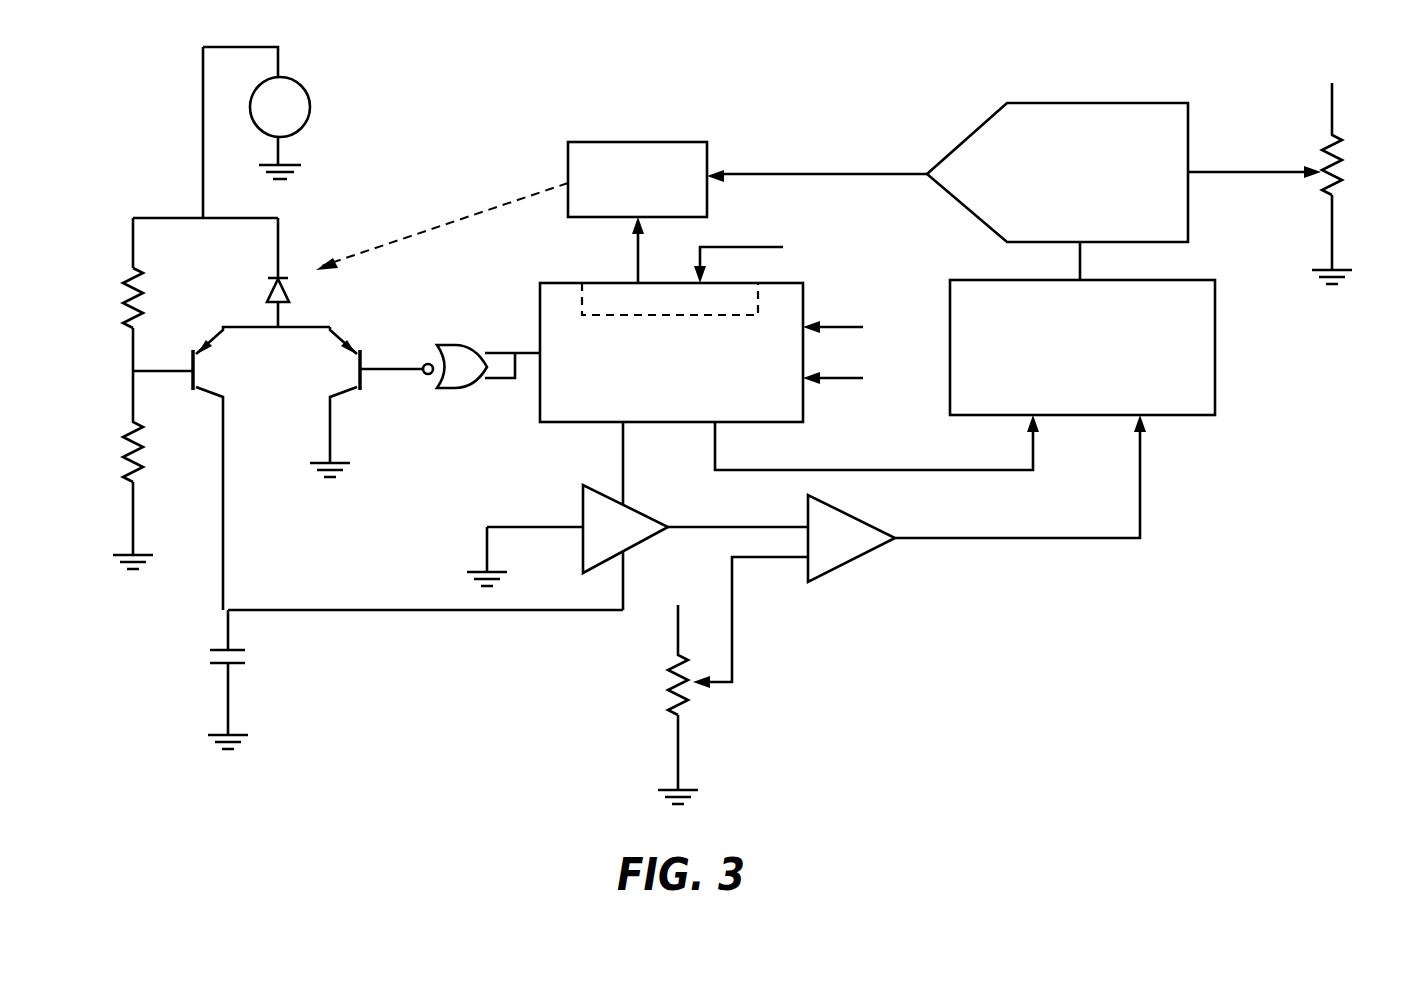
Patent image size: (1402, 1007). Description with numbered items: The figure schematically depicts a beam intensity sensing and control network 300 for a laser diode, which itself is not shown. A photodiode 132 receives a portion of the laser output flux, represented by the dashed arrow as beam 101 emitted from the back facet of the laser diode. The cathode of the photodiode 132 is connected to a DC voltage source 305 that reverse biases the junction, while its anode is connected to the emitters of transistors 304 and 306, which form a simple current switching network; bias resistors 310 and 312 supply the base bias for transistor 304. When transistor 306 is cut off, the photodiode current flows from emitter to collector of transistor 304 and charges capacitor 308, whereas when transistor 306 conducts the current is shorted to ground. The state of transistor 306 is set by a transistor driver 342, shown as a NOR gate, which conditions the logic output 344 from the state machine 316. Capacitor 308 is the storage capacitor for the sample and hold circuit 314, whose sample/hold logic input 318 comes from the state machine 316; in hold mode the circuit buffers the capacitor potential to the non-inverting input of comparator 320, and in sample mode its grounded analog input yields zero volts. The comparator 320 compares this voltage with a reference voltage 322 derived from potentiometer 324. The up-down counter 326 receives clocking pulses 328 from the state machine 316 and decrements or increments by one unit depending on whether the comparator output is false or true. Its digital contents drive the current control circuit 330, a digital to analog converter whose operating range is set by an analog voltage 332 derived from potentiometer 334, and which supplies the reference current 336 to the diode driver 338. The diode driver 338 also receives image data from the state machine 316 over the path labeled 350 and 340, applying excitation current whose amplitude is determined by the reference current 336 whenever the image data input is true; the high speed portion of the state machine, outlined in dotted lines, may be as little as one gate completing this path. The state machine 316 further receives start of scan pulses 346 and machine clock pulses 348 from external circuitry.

The beam intensity sensing and control network 300 is at (485, 80).
The DC voltage source 305 is at (308, 105).
The beam 101 is at (432, 227).
The photodiode 132 is at (268, 298).
The bias resistor 310 is at (125, 302).
The bias resistor 312 is at (128, 455).
The transistor 304 is at (202, 377).
The transistor 306 is at (352, 368).
The capacitor 308 is at (235, 665).
The transistor driver 342 is at (456, 390).
The logic output 344 is at (508, 353).
The state machine 316 is at (668, 424).
The diode driver 338 is at (638, 142).
The image data path 340 is at (640, 266).
The image data path 350 is at (748, 247).
The start of scan pulses 346 is at (833, 326).
The machine clock pulses 348 is at (837, 382).
The current control circuit 330 is at (1080, 103).
The reference current 336 is at (830, 175).
The analog voltage 332 is at (1245, 172).
The potentiometer 334 is at (1345, 160).
The up-down counter 326 is at (1217, 367).
The clocking pulses 328 is at (933, 470).
The sample/hold logic input 318 is at (623, 477).
The sample and hold circuit 314 is at (633, 548).
The comparator 320 is at (848, 565).
The reference voltage 322 is at (726, 684).
The potentiometer 324 is at (670, 692).